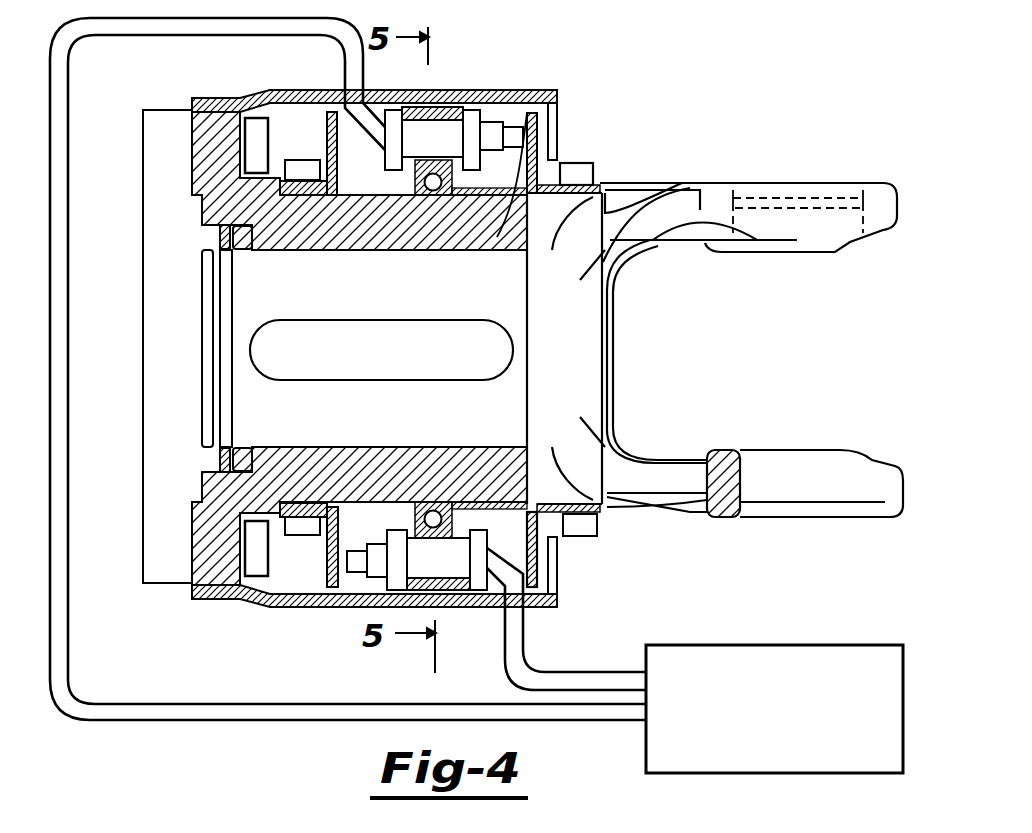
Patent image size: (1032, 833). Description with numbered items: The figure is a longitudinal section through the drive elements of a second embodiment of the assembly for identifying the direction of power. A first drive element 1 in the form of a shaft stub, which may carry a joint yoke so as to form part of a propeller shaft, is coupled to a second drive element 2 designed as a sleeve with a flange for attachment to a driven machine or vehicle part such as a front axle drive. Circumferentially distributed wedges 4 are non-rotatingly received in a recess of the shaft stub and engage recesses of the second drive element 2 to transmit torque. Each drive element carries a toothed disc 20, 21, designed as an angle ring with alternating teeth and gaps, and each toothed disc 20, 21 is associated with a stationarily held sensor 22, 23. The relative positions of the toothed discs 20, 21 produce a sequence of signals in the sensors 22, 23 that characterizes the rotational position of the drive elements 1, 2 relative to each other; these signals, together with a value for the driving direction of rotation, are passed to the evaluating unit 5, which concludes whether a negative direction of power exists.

The first drive element 1 is at (663, 192).
The second drive element 2 is at (545, 128).
The wedges 4 is at (337, 360).
The evaluating unit 5 is at (780, 723).
The toothed disc 20 is at (553, 547).
The toothed disc 21 is at (325, 590).
The sensor 22 is at (432, 107).
The sensor 23 is at (432, 578).